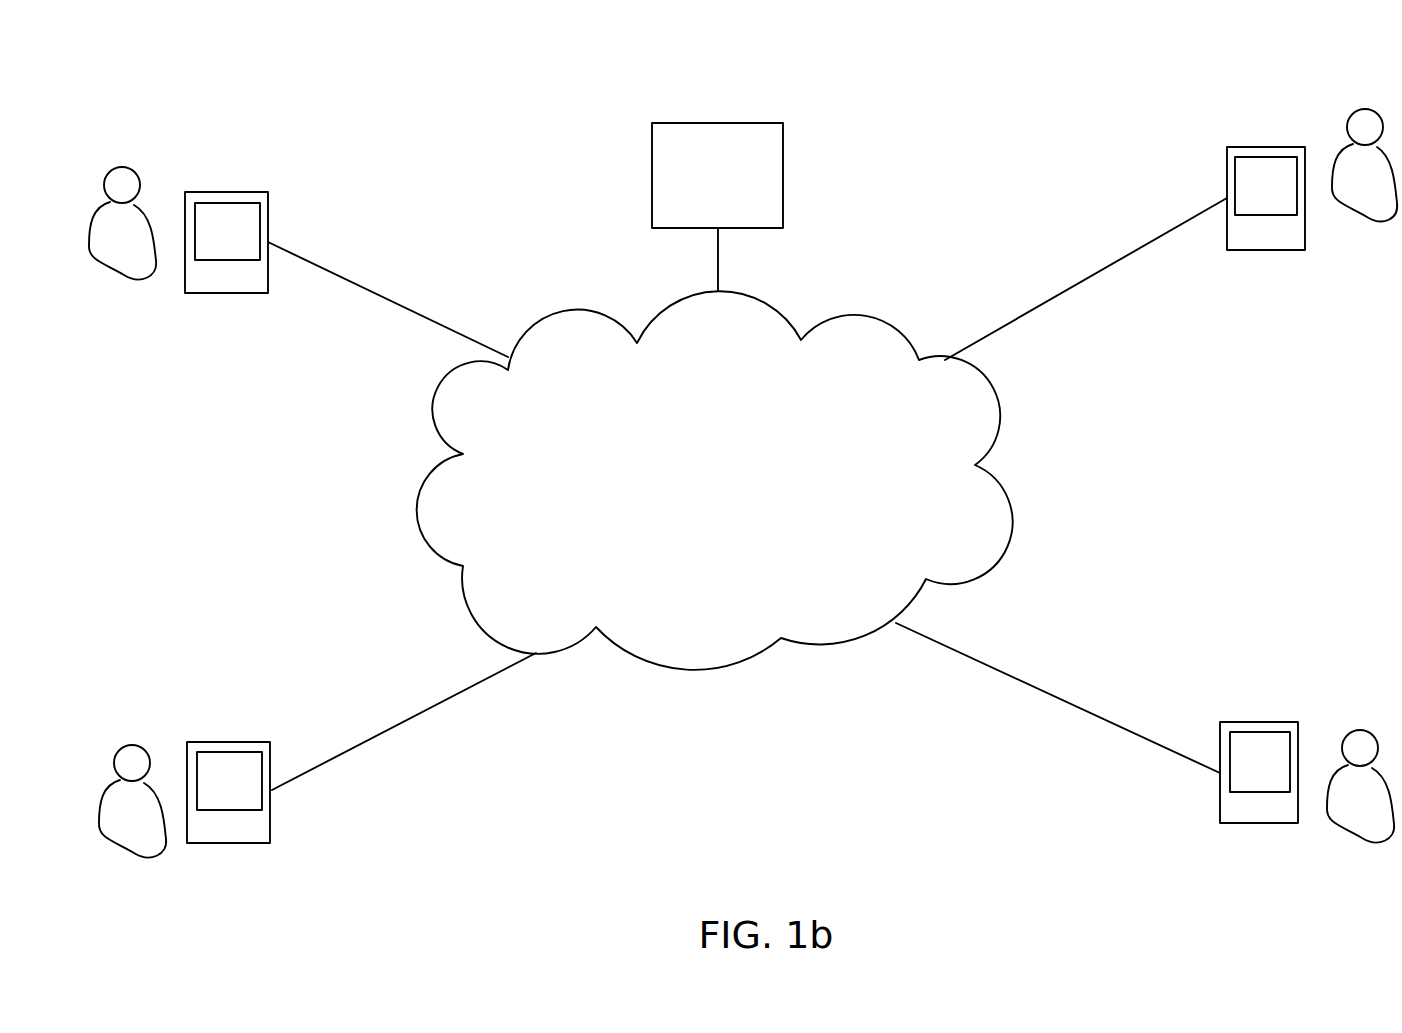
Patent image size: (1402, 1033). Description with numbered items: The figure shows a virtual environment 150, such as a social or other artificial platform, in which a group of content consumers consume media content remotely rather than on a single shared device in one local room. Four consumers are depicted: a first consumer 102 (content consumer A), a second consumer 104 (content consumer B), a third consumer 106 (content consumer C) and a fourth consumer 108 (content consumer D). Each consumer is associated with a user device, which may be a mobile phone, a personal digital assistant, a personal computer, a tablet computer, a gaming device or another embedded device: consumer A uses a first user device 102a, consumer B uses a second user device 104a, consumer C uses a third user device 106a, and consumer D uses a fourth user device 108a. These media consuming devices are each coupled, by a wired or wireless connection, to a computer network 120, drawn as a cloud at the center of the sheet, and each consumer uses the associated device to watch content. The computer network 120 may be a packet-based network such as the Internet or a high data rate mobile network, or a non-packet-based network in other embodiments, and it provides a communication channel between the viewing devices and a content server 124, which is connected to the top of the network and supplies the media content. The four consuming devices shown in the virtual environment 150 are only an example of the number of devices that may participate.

The first consumer 102 is at (123, 165).
The first user device 102a is at (220, 188).
The second consumer 104 is at (132, 740).
The second user device 104a is at (233, 740).
The third consumer 106 is at (1365, 108).
The third user device 106a is at (1263, 145).
The fourth consumer 108 is at (1358, 730).
The fourth user device 108a is at (1257, 720).
The computer network 120 is at (1008, 503).
The content server 124 is at (783, 172).
The virtual environment 150 is at (478, 128).